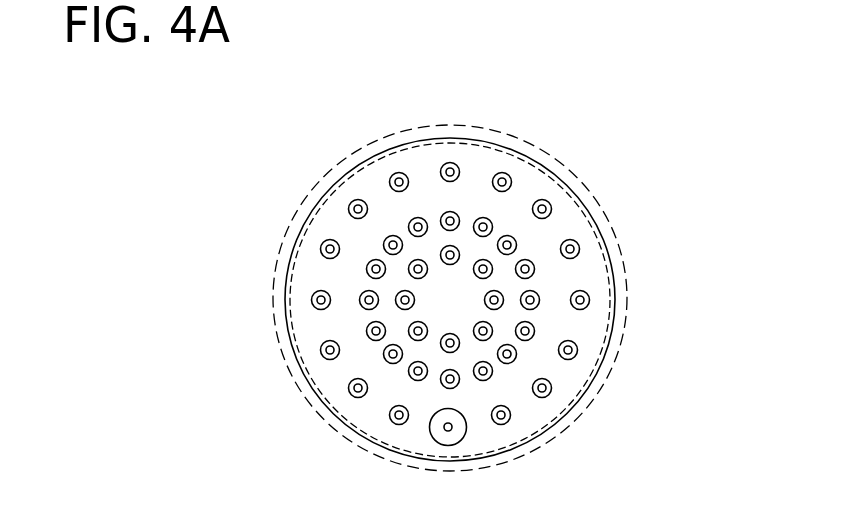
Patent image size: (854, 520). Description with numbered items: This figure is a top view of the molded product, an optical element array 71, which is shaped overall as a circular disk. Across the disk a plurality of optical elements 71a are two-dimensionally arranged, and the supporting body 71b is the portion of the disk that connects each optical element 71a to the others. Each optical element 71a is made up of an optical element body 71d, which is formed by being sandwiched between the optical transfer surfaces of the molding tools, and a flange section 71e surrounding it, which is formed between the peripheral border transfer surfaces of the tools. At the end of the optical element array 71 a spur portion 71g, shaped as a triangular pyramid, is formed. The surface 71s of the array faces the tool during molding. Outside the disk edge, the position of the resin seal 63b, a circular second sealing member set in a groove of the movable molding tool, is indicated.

The optical element array 71 is at (625, 154).
The surface of mounting plate 71s is at (533, 178).
The optical element 71a is at (588, 293).
The supporting body 71b is at (583, 320).
The optical element body 71d is at (573, 358).
The flange section 71e is at (578, 356).
The spur portion 71g is at (430, 413).
The resin seal 63b is at (332, 433).